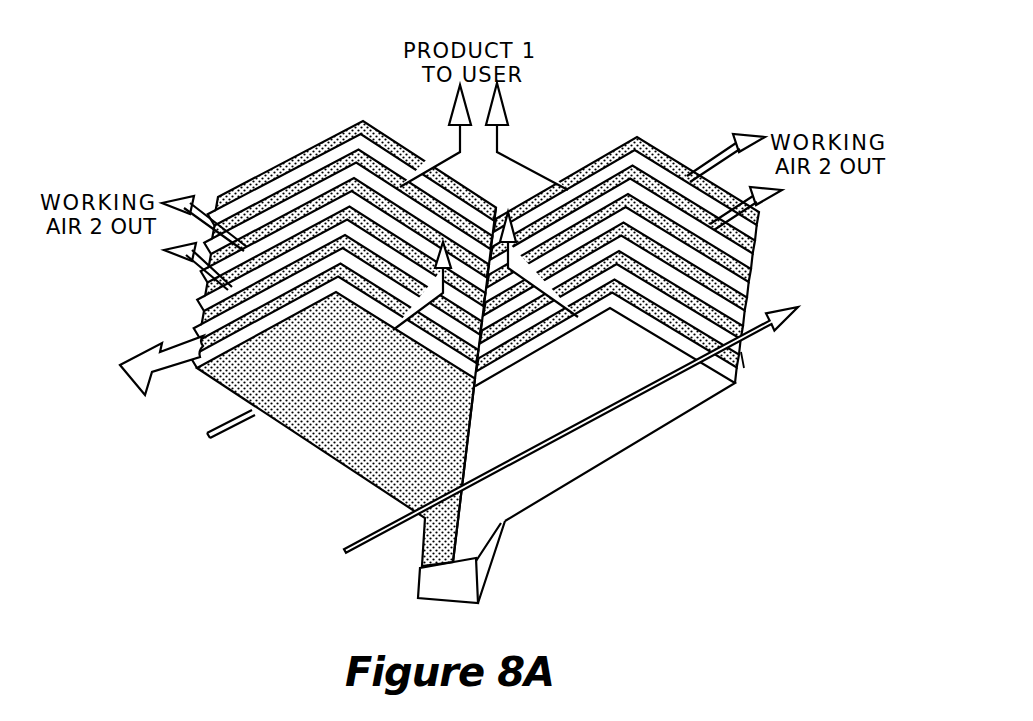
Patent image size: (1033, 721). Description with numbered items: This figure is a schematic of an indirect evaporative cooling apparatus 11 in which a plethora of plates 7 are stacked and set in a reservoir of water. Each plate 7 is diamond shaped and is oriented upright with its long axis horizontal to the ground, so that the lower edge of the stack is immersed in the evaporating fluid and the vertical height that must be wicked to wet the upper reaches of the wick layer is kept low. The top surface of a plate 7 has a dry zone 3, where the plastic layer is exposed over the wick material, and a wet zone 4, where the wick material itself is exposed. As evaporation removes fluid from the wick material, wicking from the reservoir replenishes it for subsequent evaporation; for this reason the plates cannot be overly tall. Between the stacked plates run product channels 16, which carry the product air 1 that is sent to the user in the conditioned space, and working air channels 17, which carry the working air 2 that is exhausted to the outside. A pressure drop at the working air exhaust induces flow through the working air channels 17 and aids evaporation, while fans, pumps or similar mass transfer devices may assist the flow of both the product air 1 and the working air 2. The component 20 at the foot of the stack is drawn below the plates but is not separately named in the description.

The product air 1 is at (226, 437).
The working air 2 is at (366, 552).
The dry zone 3 is at (338, 470).
The wet zone 4 is at (609, 440).
The plate 7 is at (147, 365).
The heat exchanger apparatus 11 is at (697, 82).
The product channels 16 is at (606, 242).
The working air channels 17 is at (741, 352).
The base 20 is at (460, 588).